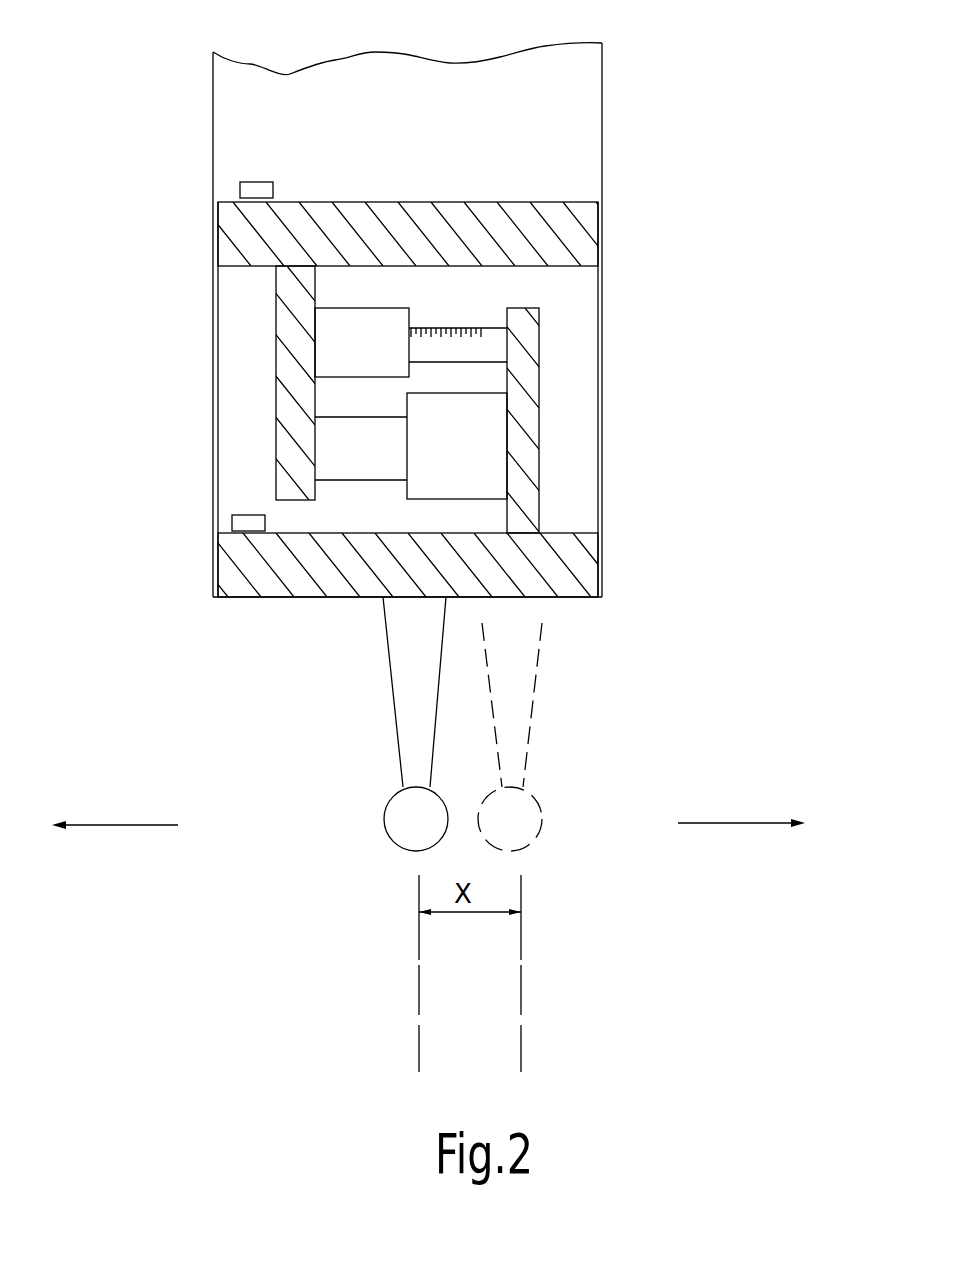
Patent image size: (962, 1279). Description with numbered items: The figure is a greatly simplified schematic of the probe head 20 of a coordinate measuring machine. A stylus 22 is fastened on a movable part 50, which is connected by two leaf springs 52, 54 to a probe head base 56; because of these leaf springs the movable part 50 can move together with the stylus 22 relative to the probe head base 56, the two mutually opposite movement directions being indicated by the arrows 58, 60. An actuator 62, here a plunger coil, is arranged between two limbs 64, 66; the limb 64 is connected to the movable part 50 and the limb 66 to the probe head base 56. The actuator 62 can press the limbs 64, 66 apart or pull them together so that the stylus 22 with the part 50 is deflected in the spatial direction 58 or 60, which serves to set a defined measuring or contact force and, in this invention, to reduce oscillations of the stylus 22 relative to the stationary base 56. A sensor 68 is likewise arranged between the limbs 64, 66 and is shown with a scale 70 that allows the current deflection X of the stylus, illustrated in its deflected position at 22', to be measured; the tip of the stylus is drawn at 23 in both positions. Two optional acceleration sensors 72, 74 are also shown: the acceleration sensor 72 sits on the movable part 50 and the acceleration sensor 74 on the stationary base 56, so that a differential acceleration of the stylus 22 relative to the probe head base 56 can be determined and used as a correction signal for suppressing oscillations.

The probe head 20 is at (622, 322).
The stylus 22 is at (378, 696).
The deflected stylus 22' is at (612, 737).
The wire tip / ball 23 is at (392, 840).
The movable part 50 is at (282, 578).
The leaf spring 52 is at (213, 410).
The leaf spring 54 is at (607, 450).
The probe head base 56 is at (358, 230).
The movement direction arrow 58 is at (737, 823).
The movement direction arrow 60 is at (112, 825).
The actuator 62 is at (363, 502).
The limb 64 is at (525, 403).
The limb 66 is at (289, 460).
The sensor 68 is at (345, 338).
The scale 70 is at (467, 323).
The acceleration sensor 72 is at (232, 520).
The acceleration sensor 74 is at (253, 182).